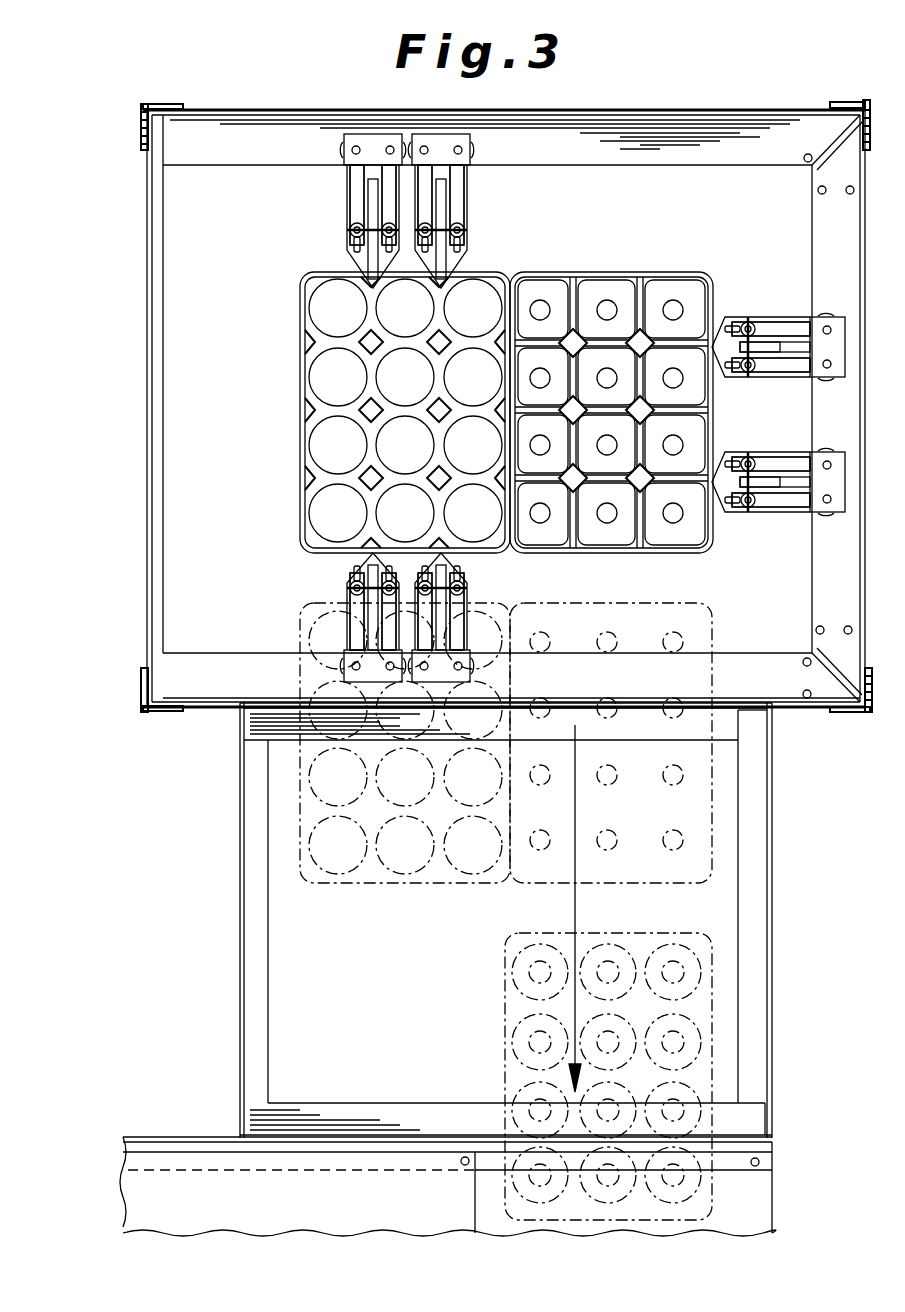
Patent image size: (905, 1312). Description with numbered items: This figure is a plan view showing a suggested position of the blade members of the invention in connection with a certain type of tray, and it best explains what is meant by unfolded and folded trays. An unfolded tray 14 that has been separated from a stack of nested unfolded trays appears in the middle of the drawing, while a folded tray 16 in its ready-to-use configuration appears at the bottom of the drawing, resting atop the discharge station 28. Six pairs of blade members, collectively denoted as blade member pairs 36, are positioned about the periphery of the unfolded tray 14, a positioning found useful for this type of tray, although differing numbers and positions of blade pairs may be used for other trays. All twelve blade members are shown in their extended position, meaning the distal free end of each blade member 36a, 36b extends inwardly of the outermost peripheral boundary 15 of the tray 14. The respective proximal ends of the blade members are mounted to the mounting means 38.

The unfolded tray 14 is at (585, 272).
The outermost peripheral boundary 15 is at (300, 405).
The folded tray 16 is at (612, 933).
The discharge station 28 is at (775, 1192).
The blade member pairs 36 is at (334, 218).
The blade member 36a is at (347, 195).
The blade member 36b is at (378, 262).
The mounting means 38 is at (600, 165).